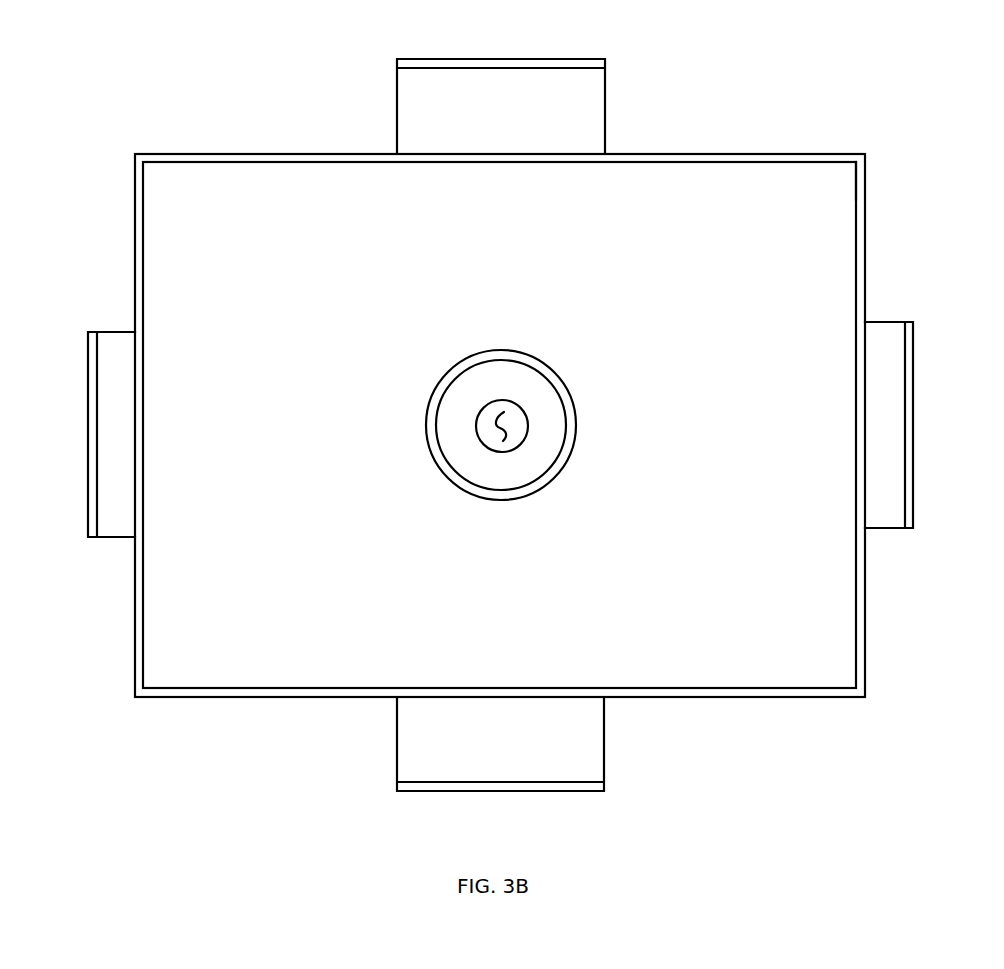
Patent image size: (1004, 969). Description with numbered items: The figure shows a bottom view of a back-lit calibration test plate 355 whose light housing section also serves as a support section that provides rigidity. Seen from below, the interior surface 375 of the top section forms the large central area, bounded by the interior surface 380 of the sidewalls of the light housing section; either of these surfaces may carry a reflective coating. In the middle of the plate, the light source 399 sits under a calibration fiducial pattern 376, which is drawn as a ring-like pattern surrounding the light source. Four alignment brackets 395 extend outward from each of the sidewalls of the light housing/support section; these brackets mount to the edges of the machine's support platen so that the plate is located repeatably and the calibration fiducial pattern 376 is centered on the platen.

The back-lit calibration test plate 355 is at (913, 825).
The interior surface of the top section 375 is at (727, 222).
The calibration fiducial pattern 376 is at (550, 365).
The interior surface of the sidewalls 380 is at (845, 208).
The alignment brackets 395 is at (605, 100).
The light source 399 is at (528, 428).